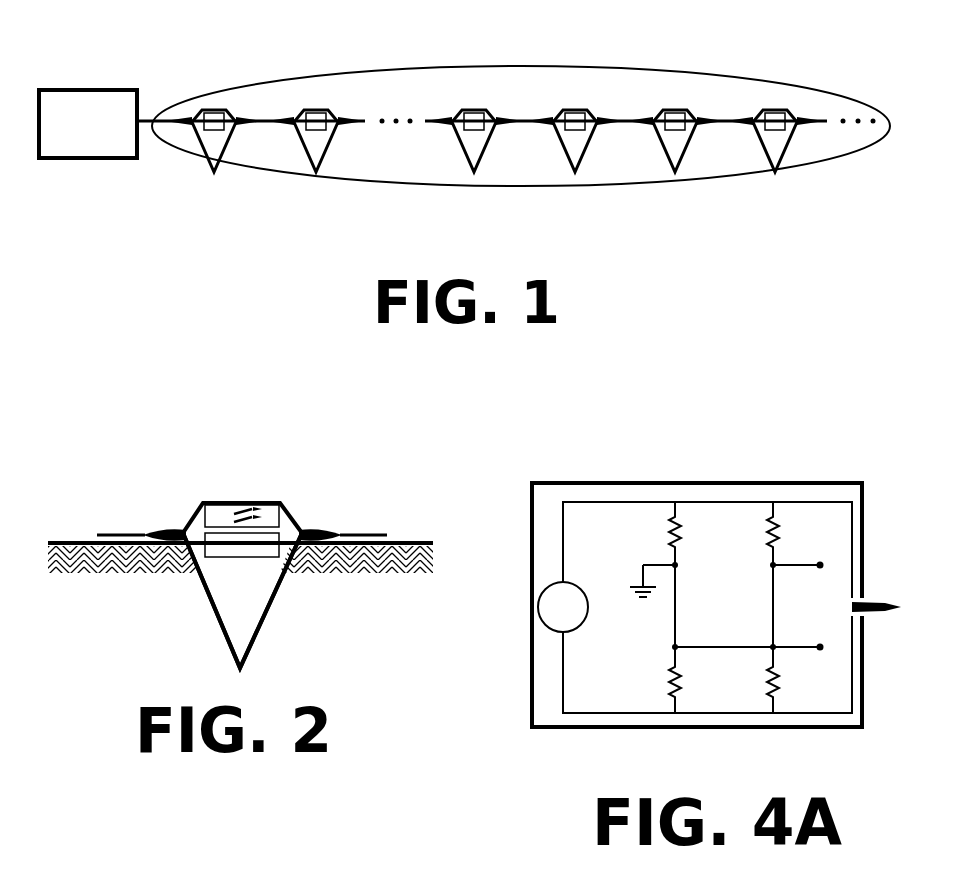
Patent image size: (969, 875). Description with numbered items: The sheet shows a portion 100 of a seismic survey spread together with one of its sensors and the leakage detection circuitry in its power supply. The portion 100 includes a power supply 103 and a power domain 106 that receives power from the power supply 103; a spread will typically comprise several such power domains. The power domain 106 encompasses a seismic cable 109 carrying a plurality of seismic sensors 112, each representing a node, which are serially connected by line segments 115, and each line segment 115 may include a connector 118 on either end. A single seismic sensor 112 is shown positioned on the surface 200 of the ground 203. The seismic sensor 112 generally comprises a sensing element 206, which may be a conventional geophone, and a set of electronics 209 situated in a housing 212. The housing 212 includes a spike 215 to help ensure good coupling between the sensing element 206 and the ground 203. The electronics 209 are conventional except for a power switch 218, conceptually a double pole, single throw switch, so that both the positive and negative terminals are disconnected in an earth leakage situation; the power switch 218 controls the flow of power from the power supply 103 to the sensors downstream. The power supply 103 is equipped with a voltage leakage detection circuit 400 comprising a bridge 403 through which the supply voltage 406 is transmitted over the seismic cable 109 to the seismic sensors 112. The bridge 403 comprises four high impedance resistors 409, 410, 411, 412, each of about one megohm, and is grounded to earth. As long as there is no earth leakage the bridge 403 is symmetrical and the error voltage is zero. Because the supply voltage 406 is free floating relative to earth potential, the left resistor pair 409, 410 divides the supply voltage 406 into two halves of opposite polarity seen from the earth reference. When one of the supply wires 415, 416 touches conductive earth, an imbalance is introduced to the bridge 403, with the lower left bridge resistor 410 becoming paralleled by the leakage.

In FIG. 1, the portion of a seismic survey spread 100 is at (110, 34).
In FIG. 1, the power supply 103 is at (138, 92).
In FIG. 4A, the power supply 103 is at (577, 484).
In FIG. 1, the power domain 106 is at (277, 173).
In FIG. 1, the seismic cable 109 is at (826, 112).
In FIG. 4A, the seismic cable 109 is at (877, 600).
In FIG. 1, the seismic sensor 112 is at (462, 150).
In FIG. 2, the seismic sensor 112 is at (130, 441).
In FIG. 1, the line segment 115 is at (523, 118).
In FIG. 2, the line segment 115 is at (140, 533).
In FIG. 1, the connector 118 is at (604, 118).
In FIG. 2, the connector 118 is at (167, 530).
In FIG. 2, the surface 200 is at (93, 542).
In FIG. 2, the ground 203 is at (128, 571).
In FIG. 2, the sensing element 206 is at (243, 560).
In FIG. 2, the electronics 209 is at (243, 501).
In FIG. 4A, the electronics 209 is at (736, 500).
In FIG. 2, the housing 212 is at (202, 506).
In FIG. 2, the spike 215 is at (222, 625).
In FIG. 2, the power switch 218 is at (259, 508).
In FIG. 4A, the voltage leakage detection circuit 400 is at (660, 457).
In FIG. 4A, the bridge 403 is at (658, 620).
In FIG. 4A, the supply voltage 406 is at (579, 587).
In FIG. 4A, the resistor 409 is at (671, 522).
In FIG. 4A, the lower left bridge resistor 410 is at (671, 665).
In FIG. 4A, the resistor 411 is at (767, 547).
In FIG. 4A, the resistor 412 is at (767, 670).
In FIG. 4A, the supply wire 415 is at (851, 514).
In FIG. 4A, the supply wire 416 is at (846, 704).